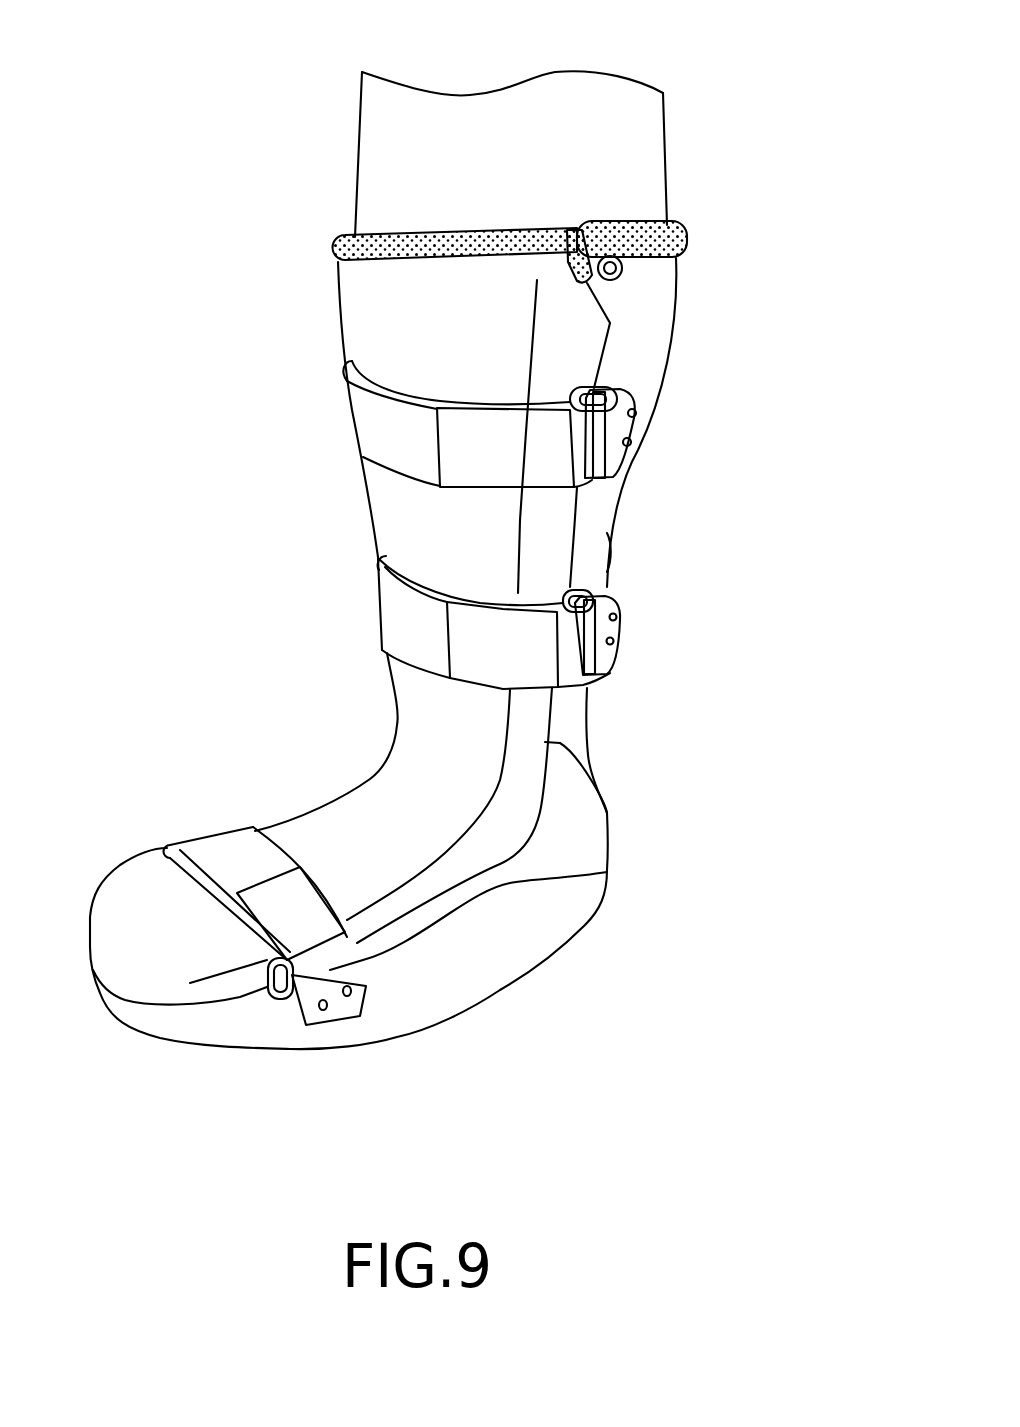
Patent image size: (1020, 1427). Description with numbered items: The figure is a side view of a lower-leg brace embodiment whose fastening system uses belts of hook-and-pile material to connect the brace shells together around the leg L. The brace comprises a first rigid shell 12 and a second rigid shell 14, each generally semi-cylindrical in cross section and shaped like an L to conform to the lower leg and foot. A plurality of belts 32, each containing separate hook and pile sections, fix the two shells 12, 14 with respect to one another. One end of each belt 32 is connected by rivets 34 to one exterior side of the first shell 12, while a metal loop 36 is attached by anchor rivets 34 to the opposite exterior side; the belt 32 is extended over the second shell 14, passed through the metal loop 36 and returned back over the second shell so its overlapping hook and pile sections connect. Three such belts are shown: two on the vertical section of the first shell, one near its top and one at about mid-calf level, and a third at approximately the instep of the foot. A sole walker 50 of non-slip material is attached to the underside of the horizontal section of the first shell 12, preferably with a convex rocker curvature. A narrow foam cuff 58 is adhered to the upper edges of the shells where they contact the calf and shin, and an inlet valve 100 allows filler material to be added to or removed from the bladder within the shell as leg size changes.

The leg L is at (593, 73).
The first rigid shell 12 is at (446, 648).
The second rigid shell 14 is at (315, 320).
The belt 32 is at (350, 433).
The rivets 34 is at (637, 413).
The metal loop 36 is at (615, 383).
The sole walker 50 is at (577, 930).
The foam cuff 58 is at (333, 240).
The inlet valve 100 is at (609, 553).